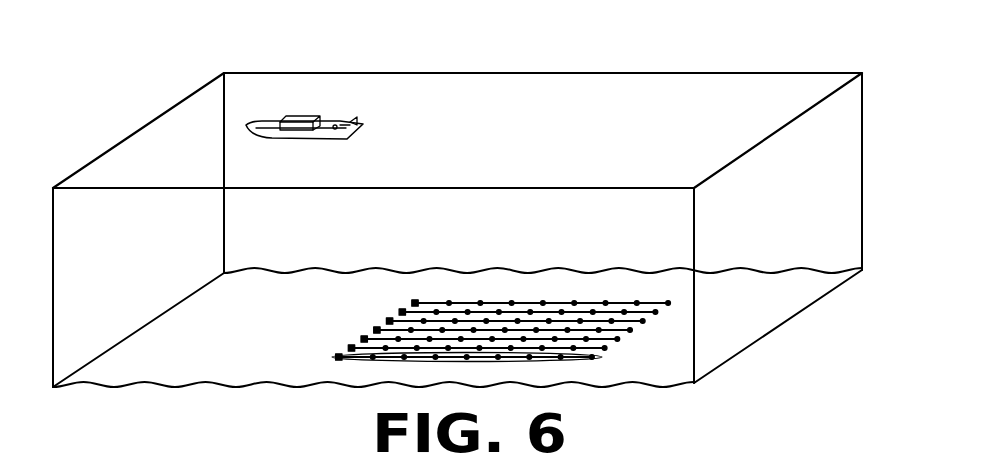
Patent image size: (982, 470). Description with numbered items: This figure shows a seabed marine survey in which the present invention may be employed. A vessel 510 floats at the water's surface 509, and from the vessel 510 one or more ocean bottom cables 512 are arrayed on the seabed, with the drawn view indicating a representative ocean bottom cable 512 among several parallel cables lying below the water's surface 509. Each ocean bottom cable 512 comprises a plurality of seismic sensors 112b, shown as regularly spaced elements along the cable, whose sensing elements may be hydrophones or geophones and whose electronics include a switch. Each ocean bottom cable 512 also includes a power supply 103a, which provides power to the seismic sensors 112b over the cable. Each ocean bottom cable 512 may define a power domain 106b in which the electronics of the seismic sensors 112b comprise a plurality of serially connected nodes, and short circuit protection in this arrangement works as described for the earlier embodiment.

The water's surface 509 is at (717, 84).
The vessel 510 is at (268, 120).
The seismic sensors 112b is at (448, 302).
The power supply 103a is at (377, 328).
The ocean bottom cable 512 is at (343, 362).
The power domain 106b is at (594, 358).